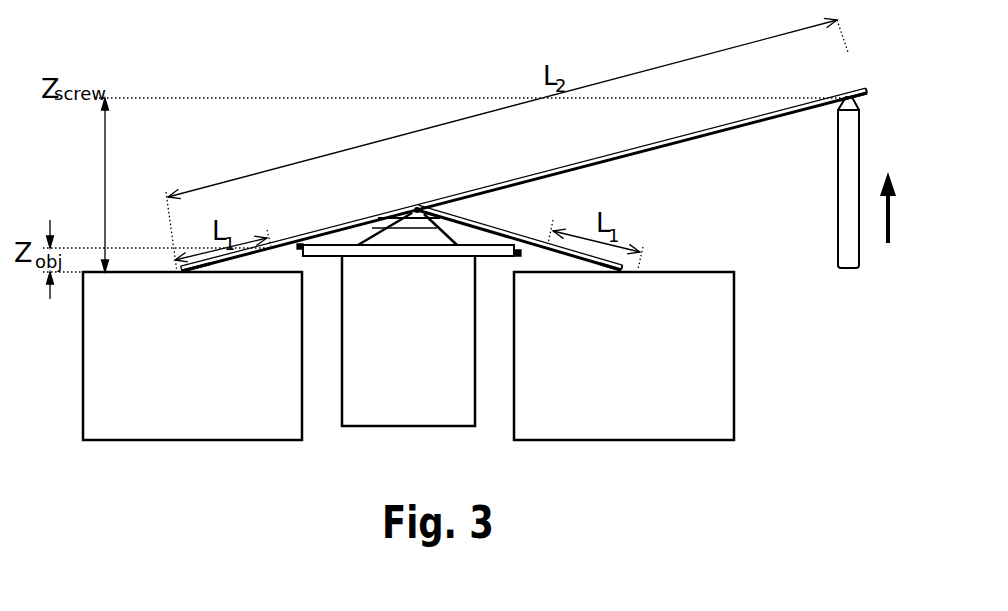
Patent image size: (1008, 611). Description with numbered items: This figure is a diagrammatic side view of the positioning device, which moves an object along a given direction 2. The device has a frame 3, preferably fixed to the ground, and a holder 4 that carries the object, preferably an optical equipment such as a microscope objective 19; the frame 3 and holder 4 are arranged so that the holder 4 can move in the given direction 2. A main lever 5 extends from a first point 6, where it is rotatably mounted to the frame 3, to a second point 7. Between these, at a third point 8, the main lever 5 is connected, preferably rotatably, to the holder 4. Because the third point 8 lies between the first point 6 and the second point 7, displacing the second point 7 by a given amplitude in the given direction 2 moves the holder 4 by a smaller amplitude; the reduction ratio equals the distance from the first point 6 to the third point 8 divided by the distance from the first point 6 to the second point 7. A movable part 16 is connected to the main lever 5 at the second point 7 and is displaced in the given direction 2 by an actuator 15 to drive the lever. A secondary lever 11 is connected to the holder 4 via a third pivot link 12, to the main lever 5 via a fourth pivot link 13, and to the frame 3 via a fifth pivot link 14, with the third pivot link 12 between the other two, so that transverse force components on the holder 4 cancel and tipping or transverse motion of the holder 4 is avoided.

The given direction 2 is at (891, 218).
The frame 3 is at (83, 363).
The holder 4 is at (318, 257).
The main lever 5 is at (671, 142).
The first point 6 is at (193, 273).
The second point 7 is at (860, 88).
The third point 8 is at (297, 244).
The secondary lever 11 is at (476, 228).
The third pivot link 12 is at (523, 256).
The fourth pivot link 13 is at (418, 209).
The fifth pivot link 14 is at (622, 269).
The actuator 15 is at (845, 217).
The movable part 16 is at (865, 94).
The microscope objective 19 is at (376, 234).